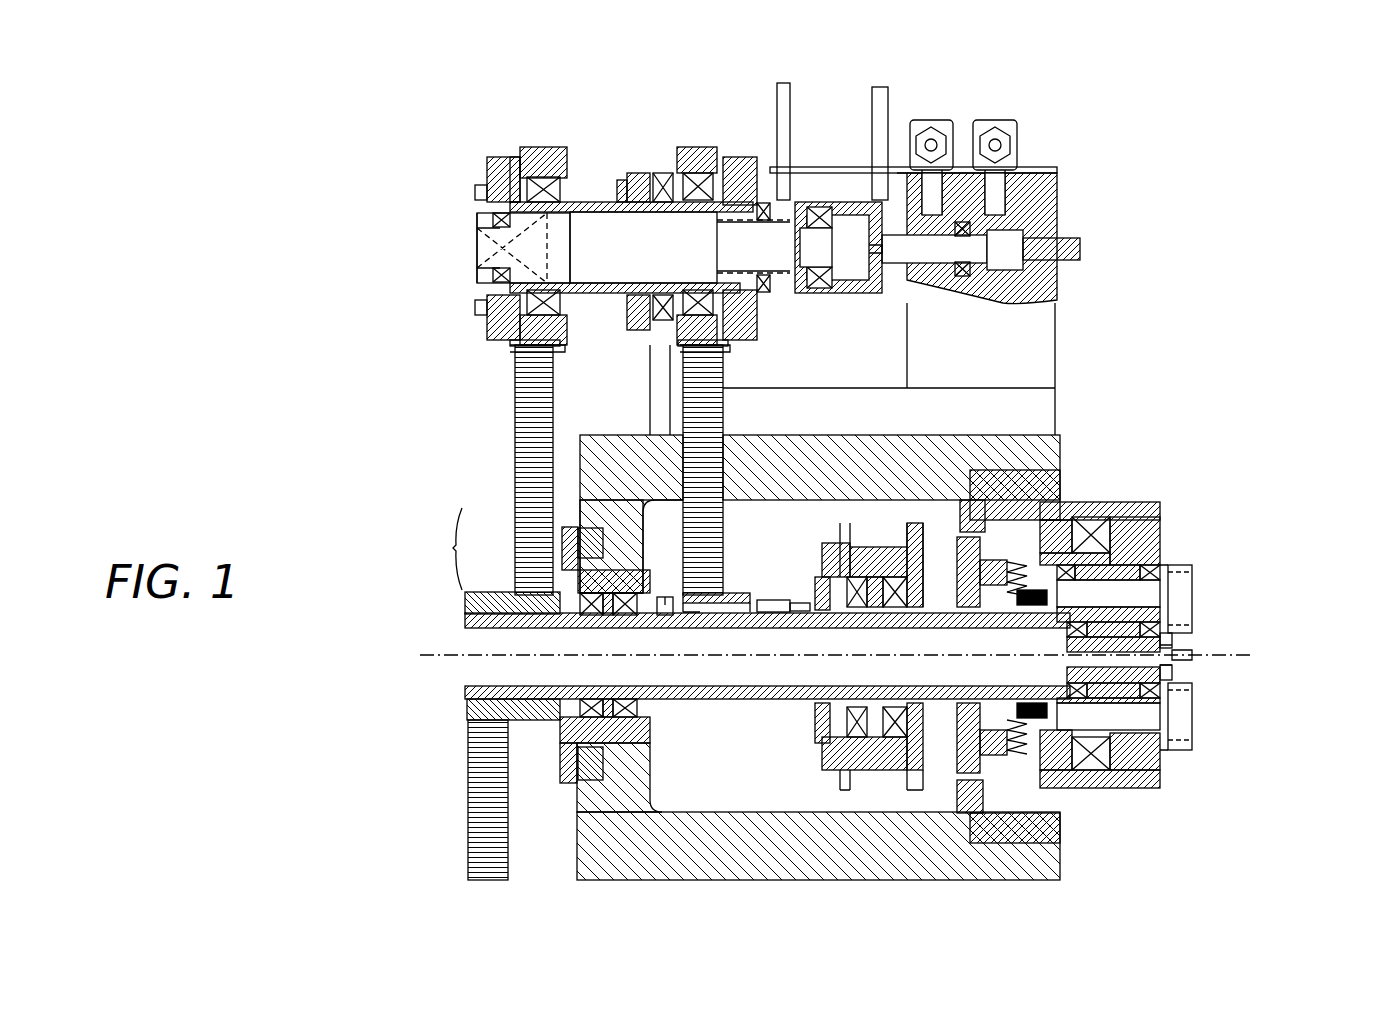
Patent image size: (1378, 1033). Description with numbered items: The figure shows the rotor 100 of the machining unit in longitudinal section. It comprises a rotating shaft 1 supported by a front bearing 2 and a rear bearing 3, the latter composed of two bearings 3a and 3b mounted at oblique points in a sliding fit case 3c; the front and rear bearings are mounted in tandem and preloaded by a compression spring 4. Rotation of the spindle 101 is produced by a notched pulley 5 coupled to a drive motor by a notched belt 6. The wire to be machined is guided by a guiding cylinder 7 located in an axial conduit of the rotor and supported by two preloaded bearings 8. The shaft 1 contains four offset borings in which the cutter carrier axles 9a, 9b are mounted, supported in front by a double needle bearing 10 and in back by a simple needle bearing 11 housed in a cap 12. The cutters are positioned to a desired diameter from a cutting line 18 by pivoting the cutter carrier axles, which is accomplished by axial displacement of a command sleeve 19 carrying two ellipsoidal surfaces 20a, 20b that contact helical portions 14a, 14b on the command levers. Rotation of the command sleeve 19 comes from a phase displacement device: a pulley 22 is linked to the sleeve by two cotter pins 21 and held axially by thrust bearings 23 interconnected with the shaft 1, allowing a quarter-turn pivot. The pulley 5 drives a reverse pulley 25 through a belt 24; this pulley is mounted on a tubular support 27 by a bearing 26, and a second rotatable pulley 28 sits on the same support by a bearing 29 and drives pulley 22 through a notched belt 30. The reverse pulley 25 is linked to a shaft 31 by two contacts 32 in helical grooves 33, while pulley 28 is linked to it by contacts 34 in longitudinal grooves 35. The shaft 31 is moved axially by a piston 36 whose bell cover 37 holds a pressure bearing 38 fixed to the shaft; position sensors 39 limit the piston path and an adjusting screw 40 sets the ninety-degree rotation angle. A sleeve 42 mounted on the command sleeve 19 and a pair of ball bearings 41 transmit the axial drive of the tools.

The rotating shaft 1 is at (1135, 597).
The front bearing 2 is at (1095, 540).
The rear bearing 3 is at (432, 538).
The bearing 3a is at (597, 608).
The bearing 3b is at (625, 612).
The sliding fit case 3c is at (568, 586).
The compression spring 4 is at (645, 614).
The notched pulley 5 is at (485, 708).
The notched belt 6 is at (470, 757).
The guiding cylinder 7 is at (1195, 662).
The preloaded bearings 8 is at (1165, 640).
The cutter carrier axle 9a is at (1150, 585).
The cutter carrier axle 9b is at (1150, 718).
The double needle bearing 10 is at (1170, 592).
The simple needle bearing 11 is at (960, 735).
The cap 12 is at (978, 782).
The helical portion 14a is at (1040, 580).
The helical portion 14b is at (1020, 727).
The cutting line 18 is at (1180, 648).
The command sleeve 19 is at (828, 608).
The ellipsoidal surface 20a is at (1020, 597).
The ellipsoidal surface 20b is at (1013, 705).
The cotter pins 21 is at (757, 603).
The pulley 22 is at (720, 598).
The thrust bearings 23 is at (667, 597).
The belt 24 is at (528, 380).
The reverse pulley 25 is at (510, 172).
The bearing 26 is at (560, 163).
The tubular support 27 is at (645, 172).
The rotatable pulley 28 is at (692, 173).
The bearing 29 is at (617, 238).
The notched belt 30 is at (708, 387).
The shaft 31 is at (590, 207).
The contacts 32 is at (492, 218).
The helical grooves 33 is at (483, 227).
The contacts 34 is at (733, 180).
The longitudinal grooves 35 is at (770, 220).
The piston 36 is at (937, 253).
The bell cover 37 is at (852, 203).
The pressure bearing 38 is at (815, 235).
The position sensors 39 is at (880, 132).
The adjusting screw 40 is at (1015, 252).
The ball bearings 41 is at (897, 607).
The sleeve 42 is at (857, 753).
The rotor 100 is at (1236, 557).
The spindle 101 is at (485, 622).